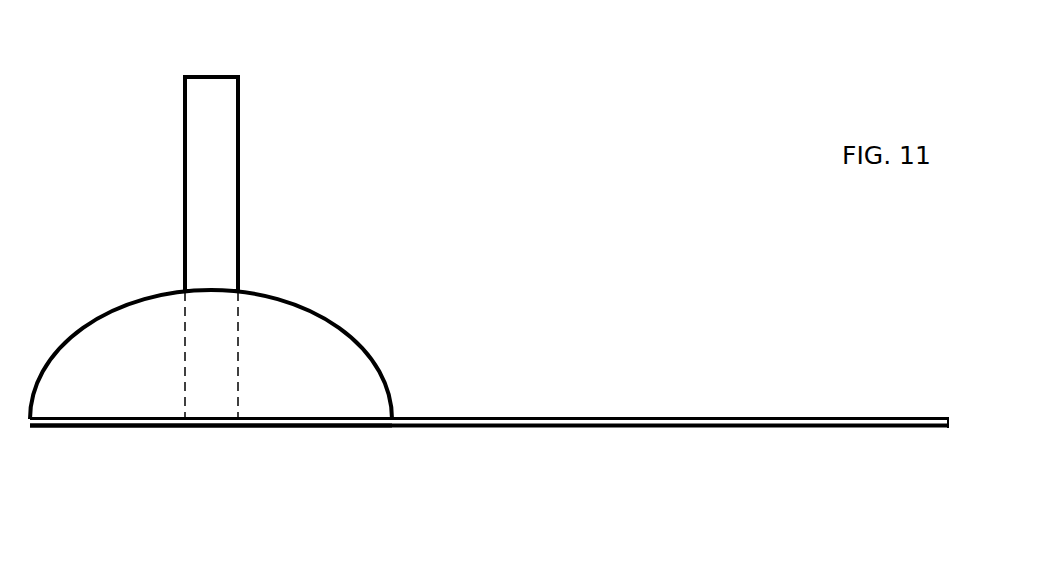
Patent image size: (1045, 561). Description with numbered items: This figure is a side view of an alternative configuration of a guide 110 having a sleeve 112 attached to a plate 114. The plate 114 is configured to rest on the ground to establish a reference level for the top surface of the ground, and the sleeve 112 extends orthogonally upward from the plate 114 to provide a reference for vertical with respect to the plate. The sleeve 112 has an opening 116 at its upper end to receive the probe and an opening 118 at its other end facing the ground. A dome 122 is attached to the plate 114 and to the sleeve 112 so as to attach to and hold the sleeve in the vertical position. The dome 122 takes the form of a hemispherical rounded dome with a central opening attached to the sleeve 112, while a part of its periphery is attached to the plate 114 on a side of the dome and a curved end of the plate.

The guide 110 is at (519, 316).
The sleeve 112 is at (182, 185).
The plate 114 is at (563, 414).
The opening 116 is at (220, 76).
The opening 118 is at (212, 427).
The dome 122 is at (318, 312).